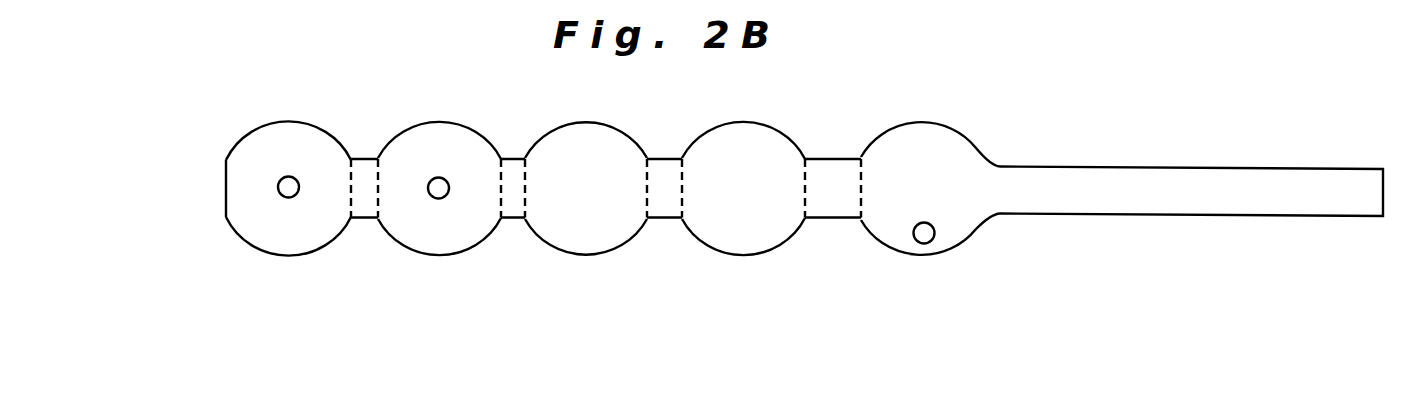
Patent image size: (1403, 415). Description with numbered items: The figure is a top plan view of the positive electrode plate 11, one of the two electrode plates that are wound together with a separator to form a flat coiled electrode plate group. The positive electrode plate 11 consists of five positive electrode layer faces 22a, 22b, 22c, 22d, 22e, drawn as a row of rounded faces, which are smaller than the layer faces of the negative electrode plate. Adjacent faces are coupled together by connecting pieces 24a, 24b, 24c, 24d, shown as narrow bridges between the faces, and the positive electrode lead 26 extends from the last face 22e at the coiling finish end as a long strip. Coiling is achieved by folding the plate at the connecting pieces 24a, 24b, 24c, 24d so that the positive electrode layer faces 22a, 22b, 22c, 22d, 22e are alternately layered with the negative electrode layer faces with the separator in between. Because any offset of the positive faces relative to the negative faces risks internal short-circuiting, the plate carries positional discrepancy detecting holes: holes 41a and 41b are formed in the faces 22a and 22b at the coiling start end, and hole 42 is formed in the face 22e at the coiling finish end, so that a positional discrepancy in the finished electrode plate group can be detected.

The positive electrode plate 11 is at (1055, 149).
The positive electrode layer face 22a is at (290, 238).
The positive electrode layer face 22b is at (440, 233).
The positive electrode layer face 22c is at (582, 230).
The positive electrode layer face 22d is at (742, 237).
The positive electrode layer face 22e is at (955, 215).
The connecting piece 24a is at (372, 178).
The connecting piece 24b is at (512, 168).
The connecting piece 24c is at (665, 175).
The connecting piece 24d is at (830, 173).
The positive electrode lead 26 is at (1078, 203).
The positional discrepancy detecting hole 41a is at (287, 175).
The positional discrepancy detecting hole 41b is at (440, 176).
The positional discrepancy detecting hole 42 is at (915, 243).